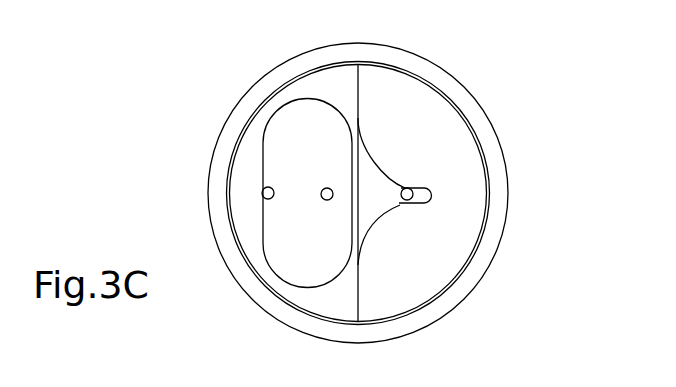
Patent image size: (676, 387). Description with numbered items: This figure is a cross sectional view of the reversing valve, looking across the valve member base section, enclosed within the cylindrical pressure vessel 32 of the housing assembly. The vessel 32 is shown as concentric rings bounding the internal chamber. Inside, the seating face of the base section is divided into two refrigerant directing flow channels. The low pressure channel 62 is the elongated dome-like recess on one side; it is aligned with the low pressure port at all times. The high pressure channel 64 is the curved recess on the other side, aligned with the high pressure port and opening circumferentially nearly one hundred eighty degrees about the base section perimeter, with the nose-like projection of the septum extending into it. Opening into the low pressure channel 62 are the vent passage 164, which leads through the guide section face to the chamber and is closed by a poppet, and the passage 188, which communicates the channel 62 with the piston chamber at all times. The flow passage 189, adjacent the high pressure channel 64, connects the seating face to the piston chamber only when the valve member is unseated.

The cylindrical pressure vessel 32 is at (490, 159).
The low pressure flow channel 62 is at (318, 155).
The high pressure flow channel 64 is at (415, 102).
The vent passage 164 is at (264, 188).
The passage 188 is at (324, 200).
The flow passage 189 is at (404, 199).